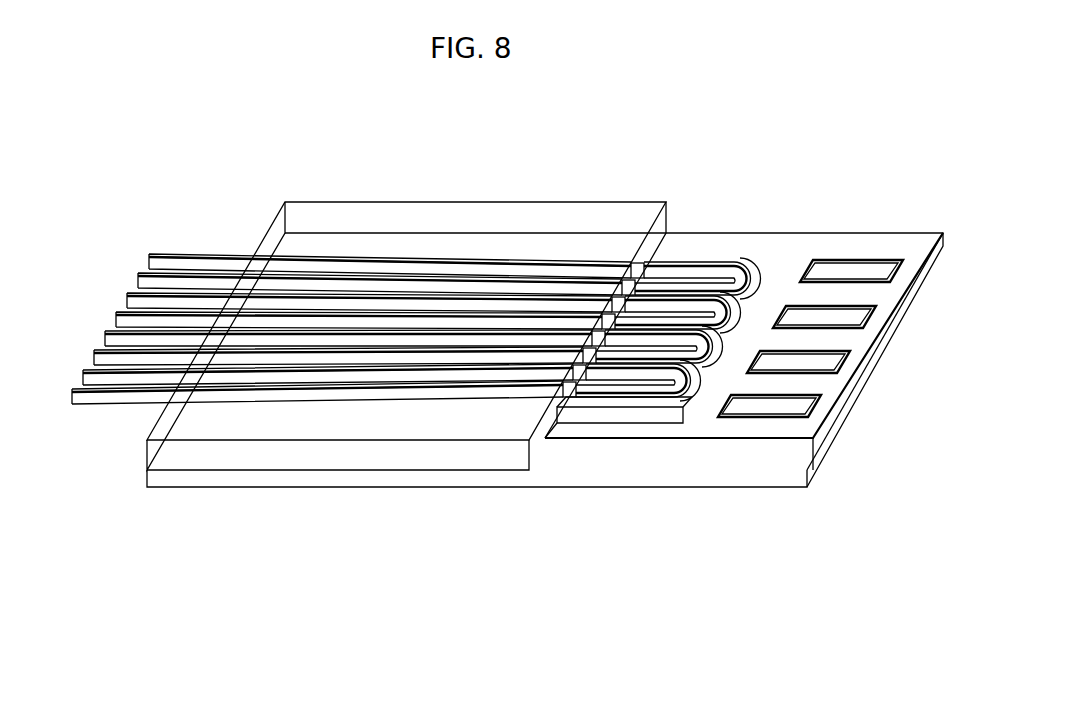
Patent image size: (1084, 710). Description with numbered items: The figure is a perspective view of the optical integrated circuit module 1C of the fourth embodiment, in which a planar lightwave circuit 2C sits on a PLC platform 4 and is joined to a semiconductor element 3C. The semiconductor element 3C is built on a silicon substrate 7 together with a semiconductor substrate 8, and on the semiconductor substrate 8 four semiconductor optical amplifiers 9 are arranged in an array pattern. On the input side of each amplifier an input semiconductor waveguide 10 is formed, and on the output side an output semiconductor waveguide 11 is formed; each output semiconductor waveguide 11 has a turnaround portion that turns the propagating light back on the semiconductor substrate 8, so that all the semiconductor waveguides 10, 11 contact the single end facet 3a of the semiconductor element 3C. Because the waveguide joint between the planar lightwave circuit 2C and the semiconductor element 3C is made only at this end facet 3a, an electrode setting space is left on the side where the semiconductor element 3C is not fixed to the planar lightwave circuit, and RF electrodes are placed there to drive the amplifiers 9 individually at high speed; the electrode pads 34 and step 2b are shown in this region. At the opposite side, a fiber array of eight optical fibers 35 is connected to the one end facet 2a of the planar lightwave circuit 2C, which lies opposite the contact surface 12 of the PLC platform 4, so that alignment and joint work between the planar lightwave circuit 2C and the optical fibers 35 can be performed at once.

The optical integrated circuit module 1C is at (553, 170).
The end facet of the planar lightwave circuit 2a is at (147, 462).
The backing member step 2b is at (685, 270).
The planar lightwave circuit 2C is at (322, 508).
The end facet of the semiconductor element 3a is at (540, 420).
The semiconductor element 3C is at (762, 184).
The PLC platform 4 is at (212, 488).
The silicon substrate 7 is at (798, 456).
The semiconductor substrate 8 is at (640, 402).
The semiconductor optical amplifiers 9 is at (745, 270).
The input semiconductor waveguides 10 is at (640, 262).
The output semiconductor waveguides 11 is at (700, 262).
The contact surface 12 is at (537, 488).
The electrode pad 34 is at (745, 413).
The optical fibers 35 is at (62, 382).